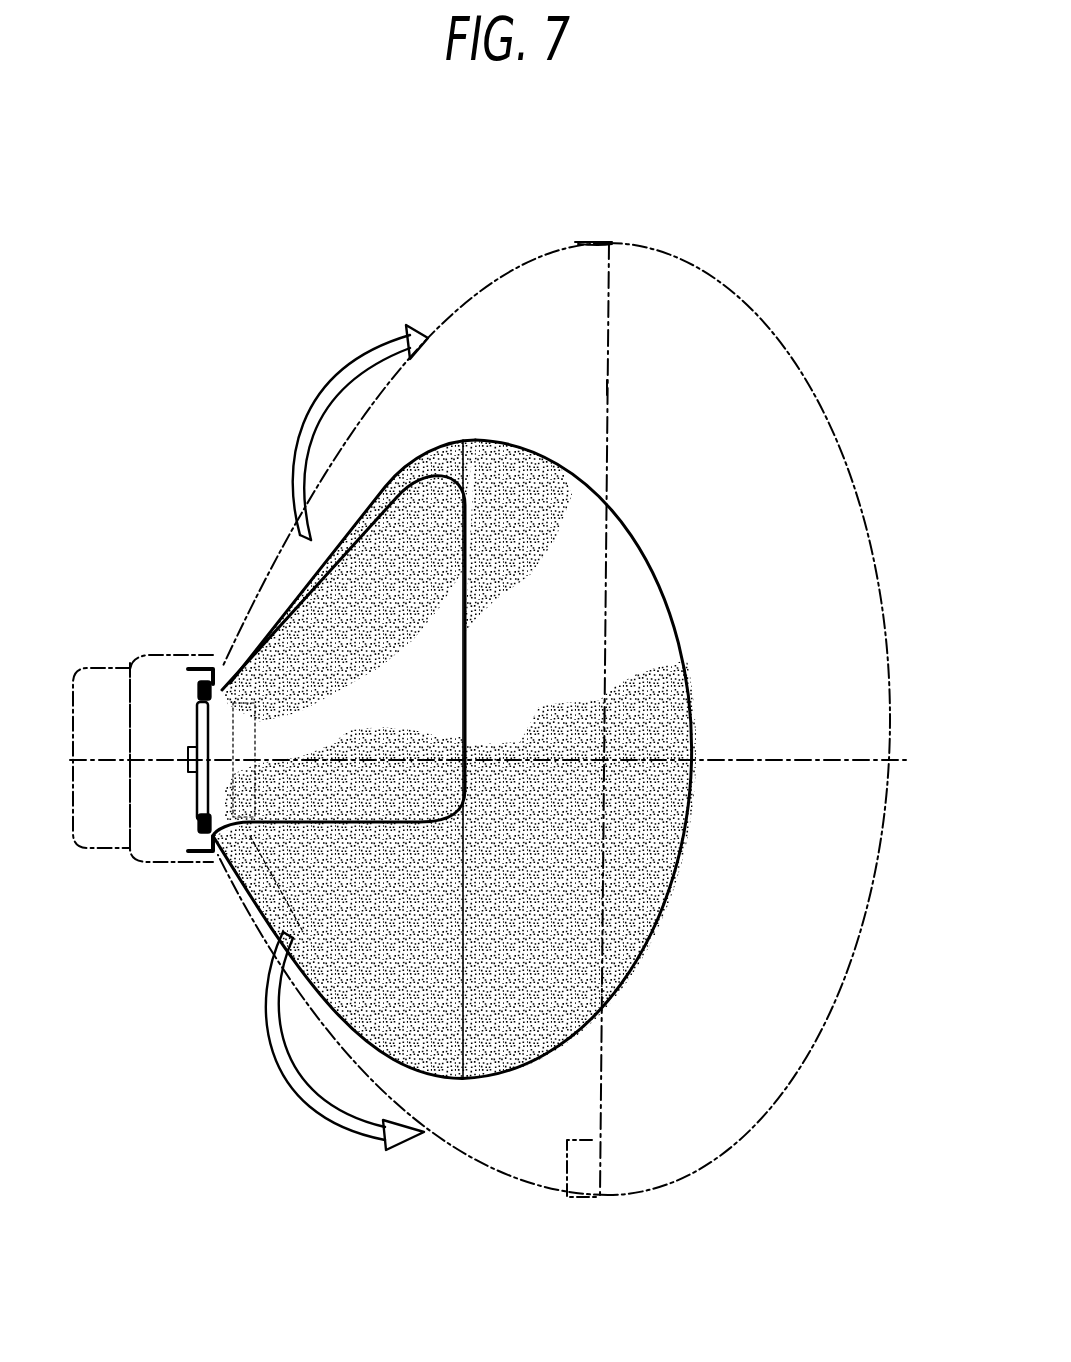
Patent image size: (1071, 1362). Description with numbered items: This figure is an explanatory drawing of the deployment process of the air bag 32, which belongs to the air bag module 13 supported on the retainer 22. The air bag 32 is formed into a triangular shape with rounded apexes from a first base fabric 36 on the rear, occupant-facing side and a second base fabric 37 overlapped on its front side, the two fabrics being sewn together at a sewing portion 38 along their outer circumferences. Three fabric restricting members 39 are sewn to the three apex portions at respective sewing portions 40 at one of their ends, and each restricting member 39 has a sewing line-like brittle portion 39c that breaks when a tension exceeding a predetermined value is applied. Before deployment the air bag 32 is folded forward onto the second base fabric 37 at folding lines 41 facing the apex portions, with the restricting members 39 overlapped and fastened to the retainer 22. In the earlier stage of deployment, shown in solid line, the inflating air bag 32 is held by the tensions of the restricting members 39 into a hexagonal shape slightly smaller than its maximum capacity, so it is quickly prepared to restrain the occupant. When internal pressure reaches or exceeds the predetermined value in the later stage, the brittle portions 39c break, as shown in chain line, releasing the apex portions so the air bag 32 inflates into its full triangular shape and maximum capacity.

The air bag module 13 is at (198, 730).
The retainer 22 is at (195, 856).
The air bag 32 is at (731, 278).
The first base fabric 36 is at (657, 613).
The second base fabric 37 is at (330, 595).
The sewing portion 38 is at (608, 392).
The fabric restricting member 39 is at (588, 241).
The brittle portion 39c is at (590, 243).
The sewing portion 40 is at (262, 633).
The folding line 41 is at (465, 477).